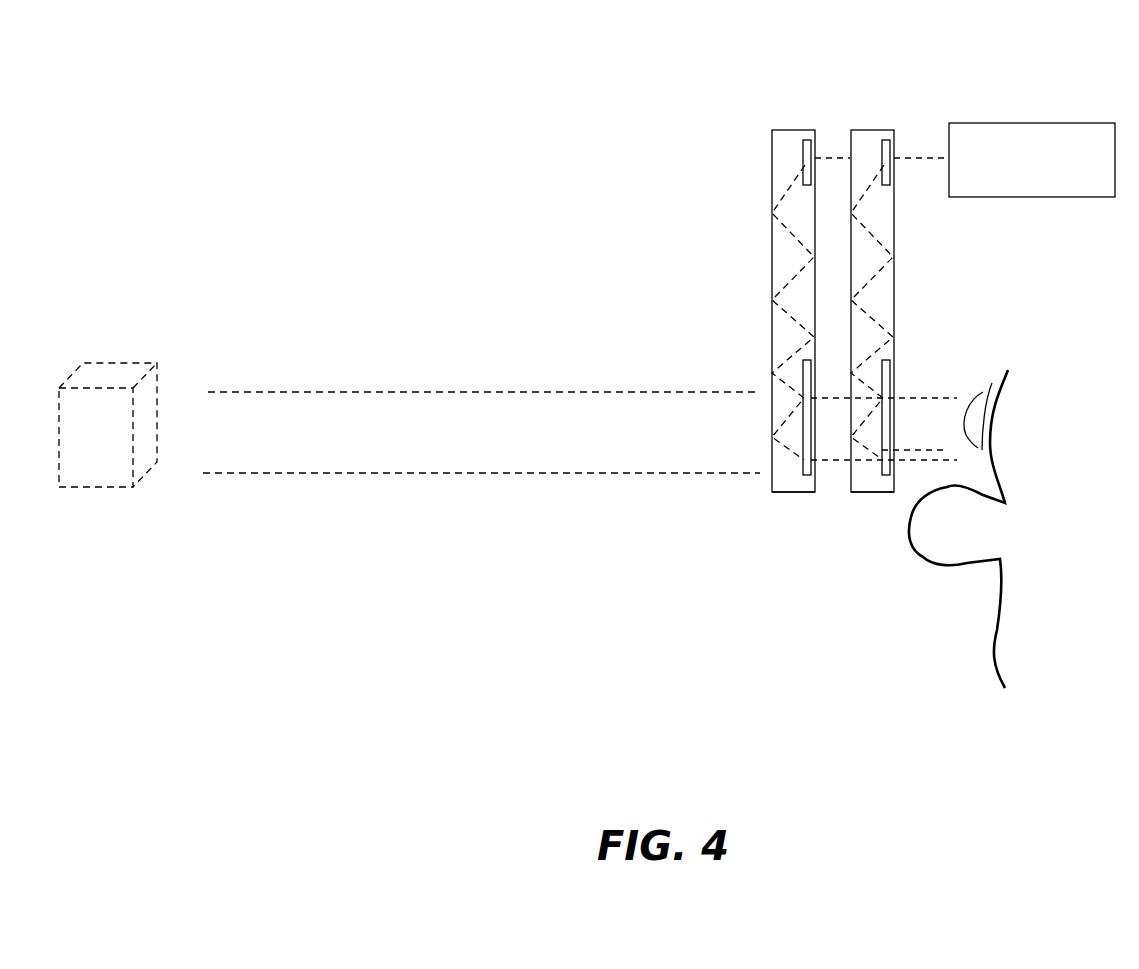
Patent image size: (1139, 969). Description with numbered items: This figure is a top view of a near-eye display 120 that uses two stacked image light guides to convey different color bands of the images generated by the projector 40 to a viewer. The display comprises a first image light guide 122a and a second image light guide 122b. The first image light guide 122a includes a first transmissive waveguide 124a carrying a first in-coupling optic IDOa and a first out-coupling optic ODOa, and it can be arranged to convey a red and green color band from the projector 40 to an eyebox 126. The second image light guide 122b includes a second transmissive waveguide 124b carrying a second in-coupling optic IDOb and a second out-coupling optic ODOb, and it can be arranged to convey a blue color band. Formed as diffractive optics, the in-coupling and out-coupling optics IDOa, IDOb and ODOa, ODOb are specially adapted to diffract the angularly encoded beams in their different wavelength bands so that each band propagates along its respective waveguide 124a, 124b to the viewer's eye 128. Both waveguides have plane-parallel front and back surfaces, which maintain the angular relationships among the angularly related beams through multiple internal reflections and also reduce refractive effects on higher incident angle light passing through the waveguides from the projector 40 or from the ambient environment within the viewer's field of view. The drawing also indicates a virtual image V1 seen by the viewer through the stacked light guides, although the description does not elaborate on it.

The near-eye display 120 is at (757, 95).
The projector 40 is at (1032, 160).
The first image light guide 122a is at (894, 243).
The second image light guide 122b is at (772, 279).
The first transmissive waveguide 124a is at (852, 493).
The second transmissive waveguide 124b is at (773, 493).
The eyebox 126 is at (913, 480).
The viewer's eye 128 is at (985, 477).
The first in-coupling optic IDOa is at (894, 147).
The second in-coupling optic IDOb is at (812, 147).
The first out-coupling optic ODOa is at (890, 378).
The second out-coupling optic ODOb is at (803, 373).
The virtual object V1 is at (409, 425).